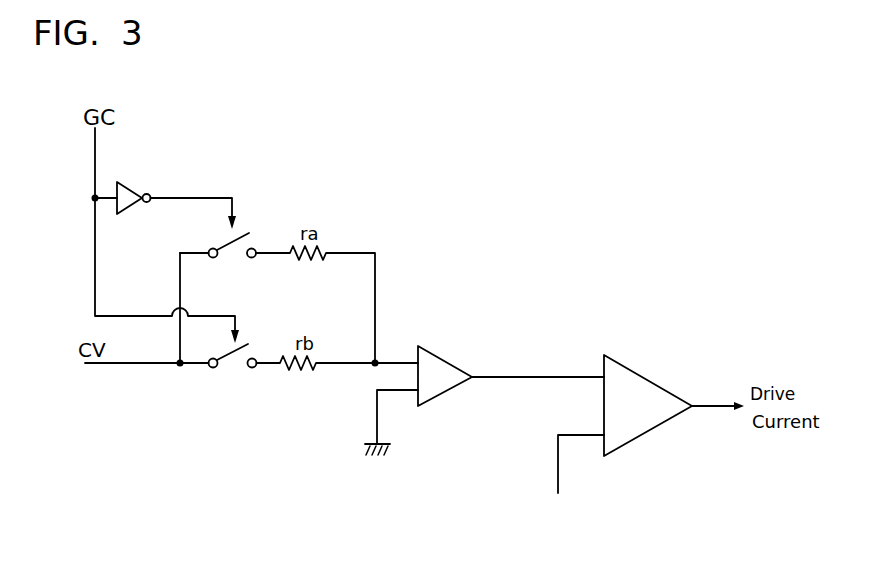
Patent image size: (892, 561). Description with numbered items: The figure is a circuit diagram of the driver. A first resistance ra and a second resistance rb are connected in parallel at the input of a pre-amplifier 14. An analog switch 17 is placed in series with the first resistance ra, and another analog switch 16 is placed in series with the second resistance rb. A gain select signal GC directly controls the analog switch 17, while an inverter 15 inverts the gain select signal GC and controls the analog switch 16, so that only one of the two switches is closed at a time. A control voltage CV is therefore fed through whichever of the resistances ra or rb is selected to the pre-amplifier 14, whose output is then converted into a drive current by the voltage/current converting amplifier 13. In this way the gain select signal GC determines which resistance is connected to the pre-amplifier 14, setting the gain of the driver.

The voltage/current converting amplifier 13 is at (642, 375).
The pre-amplifier 14 is at (453, 362).
The inverter 15 is at (137, 191).
The analog switch 16 is at (239, 262).
The analog switch 17 is at (240, 377).